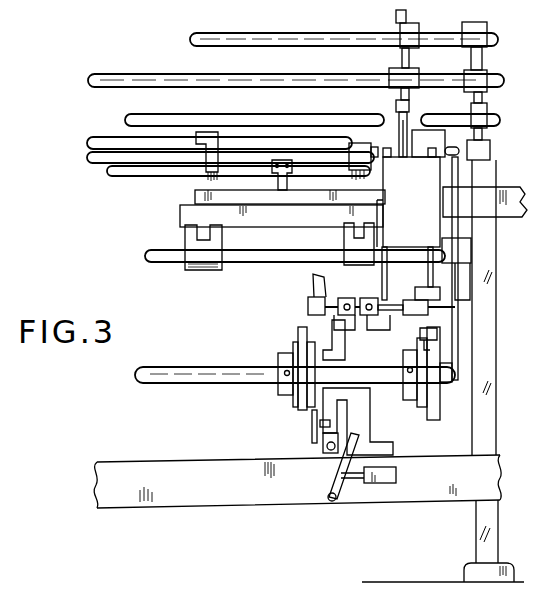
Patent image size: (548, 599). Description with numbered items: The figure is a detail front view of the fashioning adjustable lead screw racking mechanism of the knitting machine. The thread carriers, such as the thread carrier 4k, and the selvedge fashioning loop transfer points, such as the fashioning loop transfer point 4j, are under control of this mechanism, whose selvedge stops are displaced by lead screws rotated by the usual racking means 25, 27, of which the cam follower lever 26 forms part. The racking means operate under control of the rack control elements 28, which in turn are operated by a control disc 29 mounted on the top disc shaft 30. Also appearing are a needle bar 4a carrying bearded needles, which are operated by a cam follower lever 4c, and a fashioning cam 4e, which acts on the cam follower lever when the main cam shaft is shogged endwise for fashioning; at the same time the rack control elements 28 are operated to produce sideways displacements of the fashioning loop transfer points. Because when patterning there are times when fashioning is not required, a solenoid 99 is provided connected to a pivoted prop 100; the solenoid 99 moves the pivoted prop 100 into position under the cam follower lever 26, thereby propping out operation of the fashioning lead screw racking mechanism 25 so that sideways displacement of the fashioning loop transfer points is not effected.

The top disc shaft 30 is at (252, 29).
The control disc 29 is at (400, 50).
The rack control elements 28 is at (384, 140).
The fashioning loop transfer point 4j is at (357, 177).
The racking means 25 is at (385, 158).
The needle bar 4a is at (218, 222).
The thread carrier 4k is at (282, 191).
The racking means 27 is at (298, 328).
The fashioning cam 4e is at (420, 333).
The cam follower lever 4c is at (455, 380).
The cam follower lever 26 is at (322, 424).
The pivoted prop 100 is at (331, 500).
The solenoid 99 is at (382, 483).